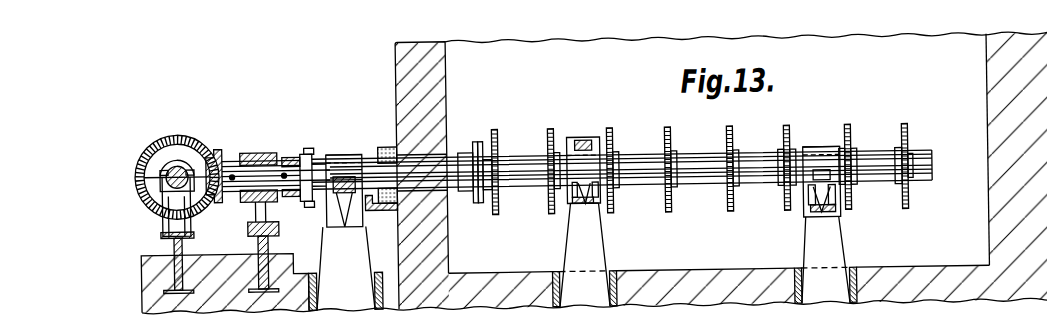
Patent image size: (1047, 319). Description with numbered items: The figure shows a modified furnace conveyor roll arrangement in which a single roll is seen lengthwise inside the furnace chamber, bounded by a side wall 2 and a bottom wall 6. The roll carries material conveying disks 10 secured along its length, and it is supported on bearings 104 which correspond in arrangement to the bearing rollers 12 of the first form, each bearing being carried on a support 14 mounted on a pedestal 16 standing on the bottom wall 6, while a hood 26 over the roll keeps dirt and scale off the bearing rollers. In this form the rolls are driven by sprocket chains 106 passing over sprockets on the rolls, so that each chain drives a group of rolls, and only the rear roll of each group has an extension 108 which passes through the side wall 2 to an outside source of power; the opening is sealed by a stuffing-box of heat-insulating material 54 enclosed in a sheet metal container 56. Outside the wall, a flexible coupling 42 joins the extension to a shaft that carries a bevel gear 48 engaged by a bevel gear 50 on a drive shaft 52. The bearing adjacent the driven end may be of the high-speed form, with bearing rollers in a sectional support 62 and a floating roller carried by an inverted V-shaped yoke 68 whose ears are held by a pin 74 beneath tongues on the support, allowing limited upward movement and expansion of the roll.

The side wall 2 is at (397, 59).
The bottom wall 6 is at (697, 269).
The material conveying disk 10 is at (663, 131).
The bearing roller 12 is at (337, 196).
The support 14 is at (368, 220).
The pedestal 16 is at (583, 254).
The hood 26 is at (333, 149).
The flexible coupling 42 is at (288, 160).
The bevel gear 48 is at (222, 144).
The bevel gear 50 is at (135, 166).
The drive shaft 52 is at (165, 174).
The heat-insulating material 54 is at (366, 152).
The sheet metal container 56 is at (390, 142).
The sectional support 62 is at (602, 200).
The yoke 68 is at (583, 138).
The pin 74 is at (585, 180).
The bearing 104 is at (578, 207).
The sprocket chain 106 is at (477, 141).
The extension 108 is at (420, 164).